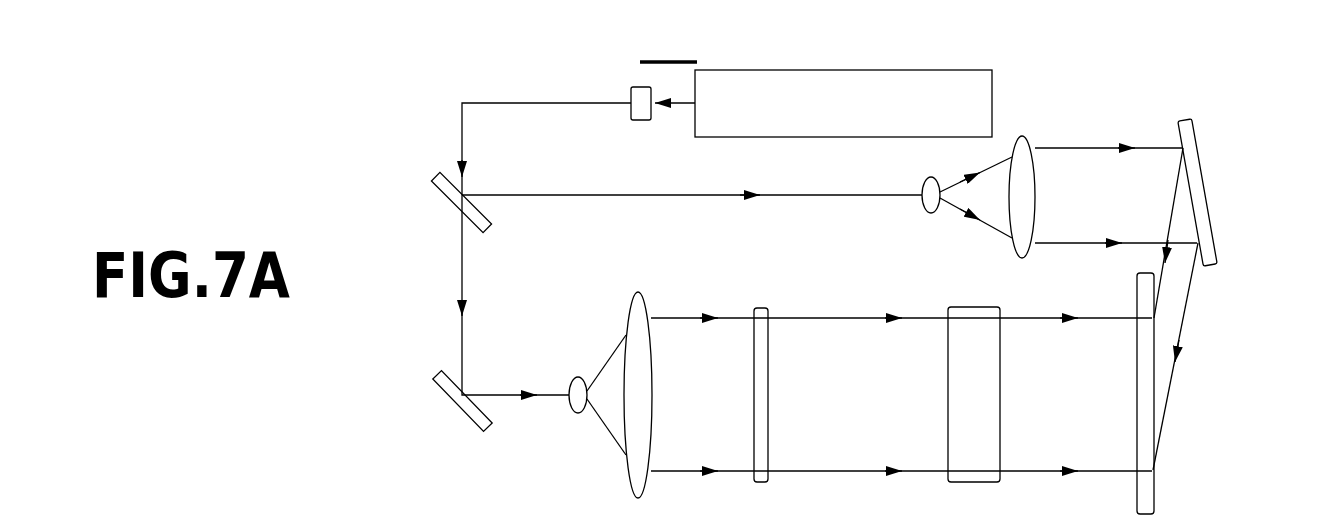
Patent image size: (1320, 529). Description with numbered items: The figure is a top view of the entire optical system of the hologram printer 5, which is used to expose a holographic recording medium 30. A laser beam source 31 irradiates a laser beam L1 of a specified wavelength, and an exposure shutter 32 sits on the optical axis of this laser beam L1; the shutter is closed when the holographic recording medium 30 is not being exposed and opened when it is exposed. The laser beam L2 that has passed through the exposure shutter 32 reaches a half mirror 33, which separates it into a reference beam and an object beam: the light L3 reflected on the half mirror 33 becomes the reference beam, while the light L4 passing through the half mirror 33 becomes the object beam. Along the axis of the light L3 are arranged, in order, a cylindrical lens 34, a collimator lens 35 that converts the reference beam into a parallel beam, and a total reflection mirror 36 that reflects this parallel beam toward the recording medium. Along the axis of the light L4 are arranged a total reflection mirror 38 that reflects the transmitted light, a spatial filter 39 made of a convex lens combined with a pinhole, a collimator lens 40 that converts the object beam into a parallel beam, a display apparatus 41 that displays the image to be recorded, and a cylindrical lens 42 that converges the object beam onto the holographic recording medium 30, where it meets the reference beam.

The hologram printer 5 is at (668, 43).
The holographic recording medium 30 is at (1137, 282).
The laser beam source 31 is at (752, 138).
The exposure shutter 32 is at (640, 122).
The half mirror 33 is at (438, 190).
The cylindrical lens 34 is at (925, 187).
The collimator lens 35 is at (1025, 138).
The total reflection mirror 36 is at (1192, 133).
The total reflection mirror 38 is at (445, 400).
The spatial filter 39 is at (575, 378).
The collimator lens 40 is at (641, 293).
The display apparatus 41 is at (762, 307).
The cylindrical lens 42 is at (968, 305).
The laser beam L1 is at (682, 108).
The laser beam L2 is at (462, 128).
The light reflected on the half mirror L3 is at (572, 200).
The light passing through the half mirror L4 is at (465, 275).